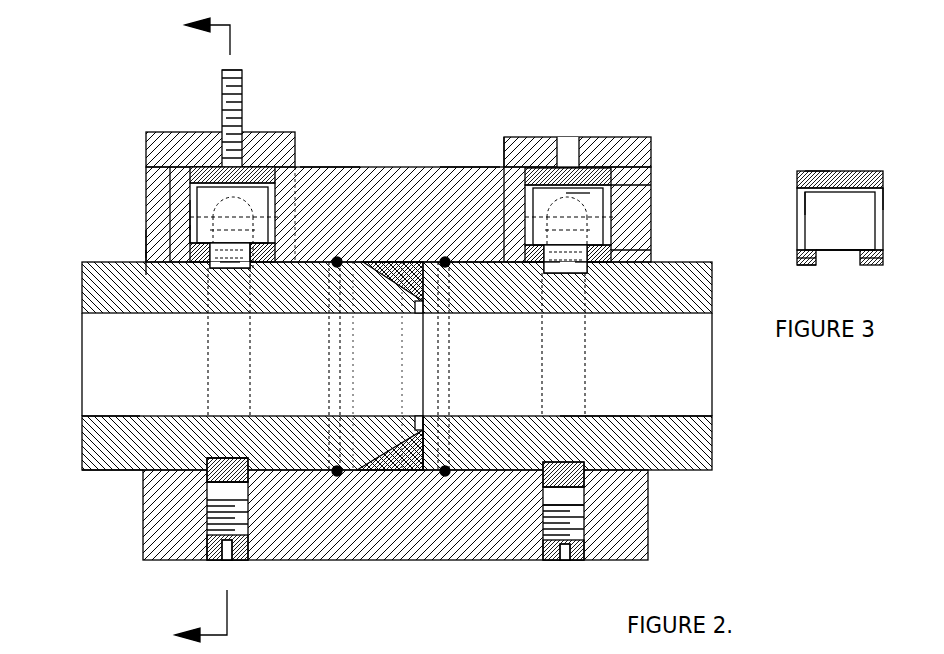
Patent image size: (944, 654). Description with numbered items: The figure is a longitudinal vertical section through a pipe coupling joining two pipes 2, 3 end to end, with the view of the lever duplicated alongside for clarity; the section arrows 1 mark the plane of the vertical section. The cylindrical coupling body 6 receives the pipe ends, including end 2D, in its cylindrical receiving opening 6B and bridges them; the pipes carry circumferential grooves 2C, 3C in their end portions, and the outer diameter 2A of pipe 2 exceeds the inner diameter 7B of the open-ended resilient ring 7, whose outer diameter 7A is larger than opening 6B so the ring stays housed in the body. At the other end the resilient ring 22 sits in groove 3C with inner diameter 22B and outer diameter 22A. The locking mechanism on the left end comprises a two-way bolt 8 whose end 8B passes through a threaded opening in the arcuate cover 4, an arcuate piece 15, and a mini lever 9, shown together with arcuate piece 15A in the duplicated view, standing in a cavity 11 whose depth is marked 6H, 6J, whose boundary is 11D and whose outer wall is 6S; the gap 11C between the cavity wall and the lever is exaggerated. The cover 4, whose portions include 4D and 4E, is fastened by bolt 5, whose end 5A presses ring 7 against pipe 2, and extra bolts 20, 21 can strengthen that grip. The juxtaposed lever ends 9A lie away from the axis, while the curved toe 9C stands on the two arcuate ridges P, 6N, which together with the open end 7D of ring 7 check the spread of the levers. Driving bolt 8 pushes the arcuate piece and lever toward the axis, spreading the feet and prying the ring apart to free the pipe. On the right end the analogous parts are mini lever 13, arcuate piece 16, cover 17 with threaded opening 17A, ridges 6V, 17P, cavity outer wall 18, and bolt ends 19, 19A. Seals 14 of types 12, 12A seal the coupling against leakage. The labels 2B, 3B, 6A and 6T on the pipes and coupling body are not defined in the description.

In FIG. 2, the section line 1- 1 is at (194, 331).
In FIG. 2, the pipe 2 is at (100, 437).
In FIG. 2, the outer diameter of pipe 2A is at (105, 471).
In FIG. 2, the upper surface of first plate 2B is at (100, 416).
In FIG. 2, the circumferential groove 2C is at (235, 478).
In FIG. 3, the circumferential groove 2C is at (812, 266).
In FIG. 2, the pipe end 2D is at (412, 284).
In FIG. 2, the pipe 3 is at (697, 447).
In FIG. 2, the upper surface of second plate 3B is at (683, 420).
In FIG. 2, the circumferential groove 3C is at (613, 418).
In FIG. 2, the arcuate cover 4 is at (289, 160).
In FIG. 2, the cover end 4D is at (190, 232).
In FIG. 2, the cover portion 4E is at (236, 264).
In FIG. 2, the bolt 5 is at (160, 228).
In FIG. 2, the bolt end 5A is at (248, 264).
In FIG. 2, the cylindrical coupling body 6 is at (463, 192).
In FIG. 2, the housing outer surface 6A is at (462, 172).
In FIG. 2, the cylindrical receiving opening 6B is at (213, 458).
In FIG. 2, the cavity depth mark 6H is at (191, 218).
In FIG. 2, the cavity depth mark 6J is at (144, 264).
In FIG. 2, the arcuate ridge 6N is at (258, 264).
In FIG. 3, the arcuate ridge 6N is at (873, 253).
In FIG. 2, the outer wall of cavity 6S is at (147, 255).
In FIG. 2, the housing top surface 6T is at (322, 168).
In FIG. 2, the arcuate ridge 6V is at (545, 266).
In FIG. 2, the open-ended resilient ring 7 is at (264, 484).
In FIG. 2, the outer diameter of ring 7A is at (190, 515).
In FIG. 2, the inner diameter of ring 7B is at (219, 458).
In FIG. 2, the open end of ring 7D is at (145, 258).
In FIG. 2, the two-way bolt 8 is at (243, 106).
In FIG. 2, the bolt end 8B is at (233, 72).
In FIG. 2, the mini lever 9 is at (214, 188).
In FIG. 3, the mini lever 9 is at (877, 225).
In FIG. 3, the mini lever end 9A is at (806, 204).
In FIG. 3, the toe of mini lever 9C is at (838, 254).
In FIG. 2, the cavity 11 is at (200, 197).
In FIG. 3, the cavity 11 is at (812, 208).
In FIG. 3, the gap 11C is at (890, 254).
In FIG. 3, the cavity boundary 11D is at (883, 196).
In FIG. 2, the seal 12 is at (331, 265).
In FIG. 2, the seal 12A is at (444, 478).
In FIG. 2, the mini lever 13 is at (560, 150).
In FIG. 2, the seal 14 is at (417, 414).
In FIG. 2, the arcuate piece 15 is at (255, 176).
In FIG. 3, the arcuate piece 15 is at (833, 186).
In FIG. 3, the arcuate piece 15A is at (813, 172).
In FIG. 2, the arcuate piece 16 is at (630, 190).
In FIG. 2, the cover 17 is at (612, 137).
In FIG. 2, the threaded opening 17A is at (568, 152).
In FIG. 2, the arcuate ridge 17P is at (598, 266).
In FIG. 2, the outer wall of cavity 18 is at (640, 256).
In FIG. 2, the bolt end 19 is at (580, 200).
In FIG. 2, the bolt end 19A is at (580, 274).
In FIG. 2, the extra bolt 20 is at (240, 560).
In FIG. 2, the extra bolt 21 is at (547, 554).
In FIG. 2, the open-ended resilient ring 22 is at (590, 486).
In FIG. 2, the outer diameter of ring 22A is at (523, 497).
In FIG. 2, the inner diameter of ring 22B is at (577, 462).
In FIG. 2, the arcuate ridge P is at (213, 264).
In FIG. 3, the arcuate ridge P is at (802, 259).